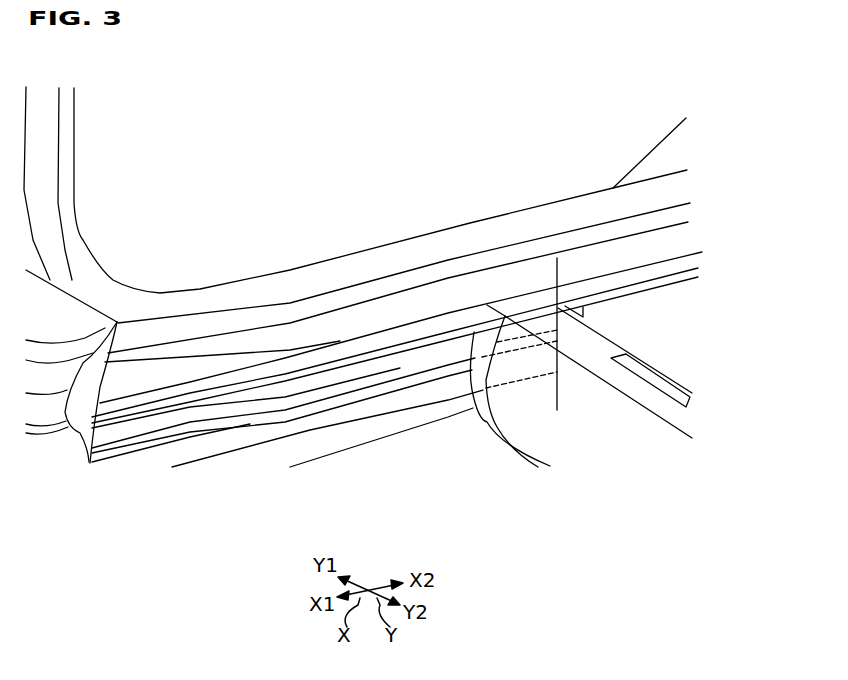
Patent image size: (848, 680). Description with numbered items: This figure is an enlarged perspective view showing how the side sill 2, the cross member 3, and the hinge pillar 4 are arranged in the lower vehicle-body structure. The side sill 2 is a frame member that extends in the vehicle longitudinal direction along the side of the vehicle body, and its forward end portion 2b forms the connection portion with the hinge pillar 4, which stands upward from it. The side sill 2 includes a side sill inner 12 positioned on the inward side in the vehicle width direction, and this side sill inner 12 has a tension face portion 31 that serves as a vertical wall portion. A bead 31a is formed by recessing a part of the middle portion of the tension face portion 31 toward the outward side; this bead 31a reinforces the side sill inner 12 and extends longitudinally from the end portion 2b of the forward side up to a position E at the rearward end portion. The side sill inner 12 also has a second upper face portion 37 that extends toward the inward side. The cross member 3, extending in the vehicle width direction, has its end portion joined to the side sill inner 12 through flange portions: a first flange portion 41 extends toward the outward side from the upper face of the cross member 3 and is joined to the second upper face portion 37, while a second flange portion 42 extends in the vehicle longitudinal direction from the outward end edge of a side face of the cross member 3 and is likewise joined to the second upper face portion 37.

The side sill 2 is at (274, 266).
The end portion 2b is at (85, 455).
The cross member 3 is at (587, 418).
The hinge pillar 4 is at (40, 157).
The side sill inner 12 is at (353, 320).
The tension face portion 31 is at (153, 427).
The bead 31a is at (252, 432).
The second upper face portion 37 is at (452, 320).
The first flange portion 41 is at (512, 306).
The second flange portion 42 is at (470, 402).
The position of an end portion of a rearward side E is at (550, 383).